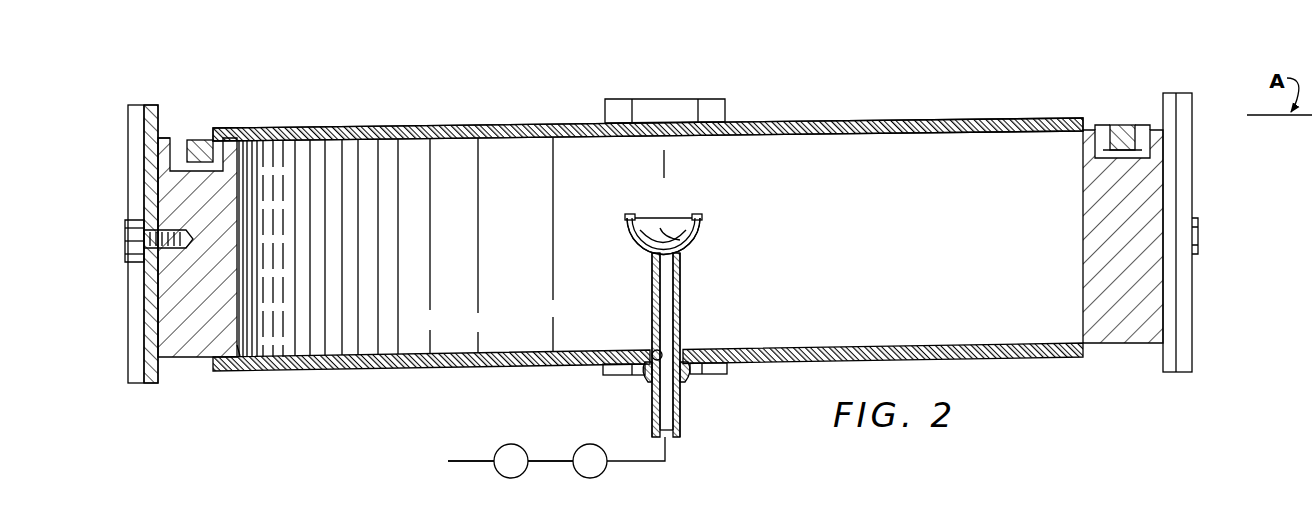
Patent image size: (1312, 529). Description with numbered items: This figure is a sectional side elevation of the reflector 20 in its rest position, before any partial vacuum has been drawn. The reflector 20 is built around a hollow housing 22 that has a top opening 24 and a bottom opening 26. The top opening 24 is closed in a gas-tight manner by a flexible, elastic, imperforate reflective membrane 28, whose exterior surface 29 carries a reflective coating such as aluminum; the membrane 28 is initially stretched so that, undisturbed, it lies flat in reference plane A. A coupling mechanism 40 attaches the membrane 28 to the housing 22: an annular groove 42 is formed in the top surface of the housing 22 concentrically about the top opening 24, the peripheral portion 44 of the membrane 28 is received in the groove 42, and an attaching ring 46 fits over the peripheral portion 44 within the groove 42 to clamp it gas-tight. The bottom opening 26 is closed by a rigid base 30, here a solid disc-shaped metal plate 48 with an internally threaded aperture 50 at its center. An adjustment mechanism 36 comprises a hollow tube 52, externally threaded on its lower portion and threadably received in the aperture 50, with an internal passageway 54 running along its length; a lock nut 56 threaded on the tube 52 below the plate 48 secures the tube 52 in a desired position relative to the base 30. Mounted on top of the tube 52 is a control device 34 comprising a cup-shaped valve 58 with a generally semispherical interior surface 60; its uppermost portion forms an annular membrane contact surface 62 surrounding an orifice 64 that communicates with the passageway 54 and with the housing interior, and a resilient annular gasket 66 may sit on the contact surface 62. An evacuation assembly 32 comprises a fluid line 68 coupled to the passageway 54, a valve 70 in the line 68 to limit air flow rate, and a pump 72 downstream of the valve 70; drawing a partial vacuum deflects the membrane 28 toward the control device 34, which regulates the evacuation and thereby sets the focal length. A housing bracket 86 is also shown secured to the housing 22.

The reflector 20 is at (1205, 289).
The hollow housing 22 is at (217, 292).
The top opening 24 is at (245, 150).
The bottom opening 26 is at (240, 352).
The reflective membrane 28 is at (303, 127).
The exterior surface 29 is at (808, 121).
The rigid base 30 is at (366, 373).
The evacuation assembly 32 is at (556, 470).
The control device 34 is at (698, 250).
The adjustment mechanism 36 is at (687, 335).
The coupling mechanism 40 is at (1117, 123).
The annular groove 42 is at (1110, 147).
The peripheral portion 44 is at (182, 150).
The attaching ring 46 is at (1121, 127).
The metal plate 48 is at (466, 357).
The threaded aperture 50 is at (658, 350).
The hollow tube 52 is at (682, 295).
The internal passageway 54 is at (668, 276).
The lock nut 56 is at (691, 378).
The cup-shaped valve 58 is at (700, 235).
The interior surface 60 is at (645, 246).
The membrane contact surface 62 is at (630, 215).
The orifice 64 is at (686, 232).
The annular gasket 66 is at (648, 216).
The fluid line 68 is at (652, 462).
The valve 70 is at (612, 428).
The pump 72 is at (520, 445).
The housing bracket 86 is at (690, 112).